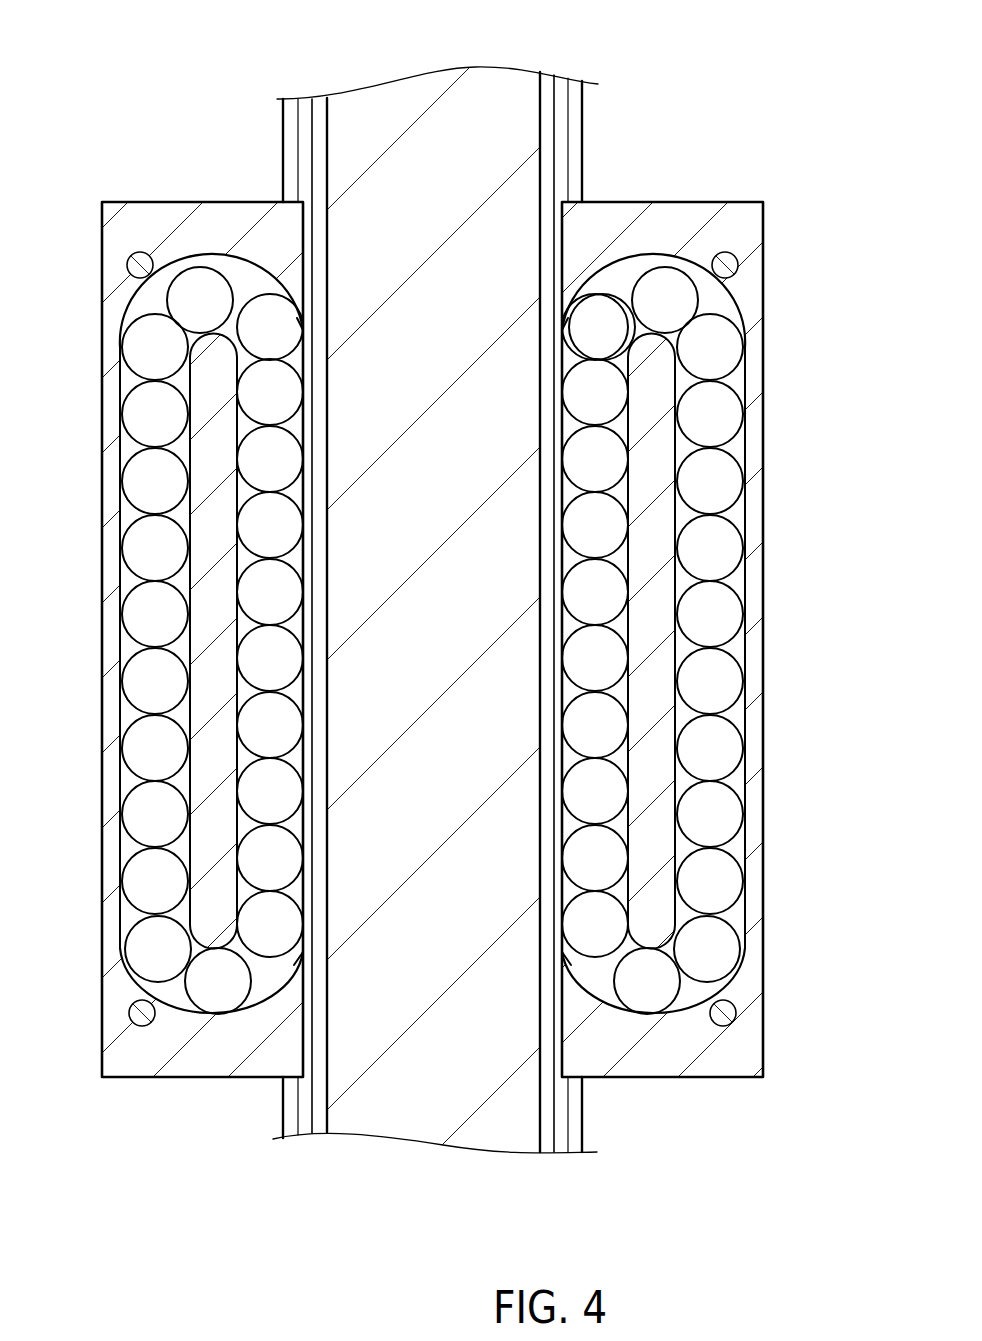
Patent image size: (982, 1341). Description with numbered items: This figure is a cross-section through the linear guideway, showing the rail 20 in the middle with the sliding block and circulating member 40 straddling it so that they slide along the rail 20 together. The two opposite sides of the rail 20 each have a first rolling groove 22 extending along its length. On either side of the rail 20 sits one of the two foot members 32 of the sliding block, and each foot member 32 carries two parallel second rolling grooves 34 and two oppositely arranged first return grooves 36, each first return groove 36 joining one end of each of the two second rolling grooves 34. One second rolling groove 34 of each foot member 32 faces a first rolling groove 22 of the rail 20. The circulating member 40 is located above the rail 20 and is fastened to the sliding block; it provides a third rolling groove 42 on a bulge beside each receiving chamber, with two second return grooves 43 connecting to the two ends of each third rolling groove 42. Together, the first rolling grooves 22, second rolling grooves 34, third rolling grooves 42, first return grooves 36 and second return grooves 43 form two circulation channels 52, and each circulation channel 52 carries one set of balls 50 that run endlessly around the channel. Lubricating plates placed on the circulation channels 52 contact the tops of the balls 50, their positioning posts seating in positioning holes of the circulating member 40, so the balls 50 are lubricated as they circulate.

The rail 20 is at (460, 140).
The first rolling groove 22 is at (563, 562).
The foot member 32 is at (210, 667).
The second rolling groove 34 is at (618, 428).
The first return groove 36 is at (655, 320).
The circulating member 40 is at (491, 637).
The third rolling groove 42 is at (747, 442).
The second return groove 43 is at (655, 258).
The balls 50 is at (608, 308).
The circulation channel 52 is at (491, 637).